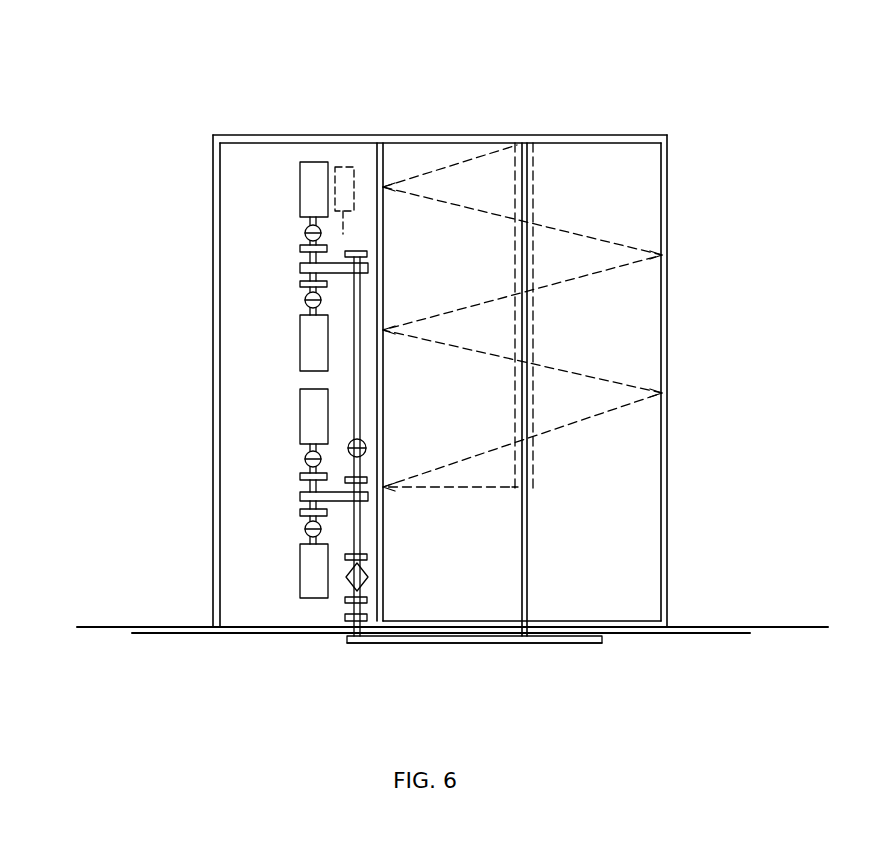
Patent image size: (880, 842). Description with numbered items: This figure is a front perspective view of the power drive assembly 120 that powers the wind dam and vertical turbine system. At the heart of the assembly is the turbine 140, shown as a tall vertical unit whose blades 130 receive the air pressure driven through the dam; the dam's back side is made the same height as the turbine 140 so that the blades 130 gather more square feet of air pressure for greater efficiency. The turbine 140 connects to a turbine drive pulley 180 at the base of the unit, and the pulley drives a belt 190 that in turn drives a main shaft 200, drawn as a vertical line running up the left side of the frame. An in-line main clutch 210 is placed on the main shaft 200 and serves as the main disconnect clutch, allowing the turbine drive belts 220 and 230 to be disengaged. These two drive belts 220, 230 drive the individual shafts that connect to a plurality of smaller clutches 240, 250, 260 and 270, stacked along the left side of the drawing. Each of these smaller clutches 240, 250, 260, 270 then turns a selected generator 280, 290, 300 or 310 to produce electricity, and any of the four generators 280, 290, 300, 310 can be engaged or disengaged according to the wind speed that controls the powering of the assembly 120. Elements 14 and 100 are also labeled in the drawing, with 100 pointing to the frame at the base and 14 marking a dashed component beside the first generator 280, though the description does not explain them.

The sensor module 14 is at (354, 166).
The frame 100 is at (668, 630).
The power drive assembly 120 is at (689, 79).
The blades 130 is at (474, 158).
The turbine 140 is at (535, 336).
The turbine drive pulley 180 is at (548, 641).
The belt 190 is at (475, 644).
The main shaft 200 is at (346, 607).
The in-line main clutch 210 is at (366, 580).
The turbine drive belt 220 is at (368, 500).
The turbine drive belt 230 is at (368, 266).
The clutch 240 is at (305, 236).
The clutch 250 is at (305, 301).
The clutch 260 is at (303, 463).
The clutch 270 is at (303, 527).
The generator 280 is at (310, 189).
The generator 290 is at (308, 360).
The generator 300 is at (308, 423).
The generator 310 is at (310, 577).